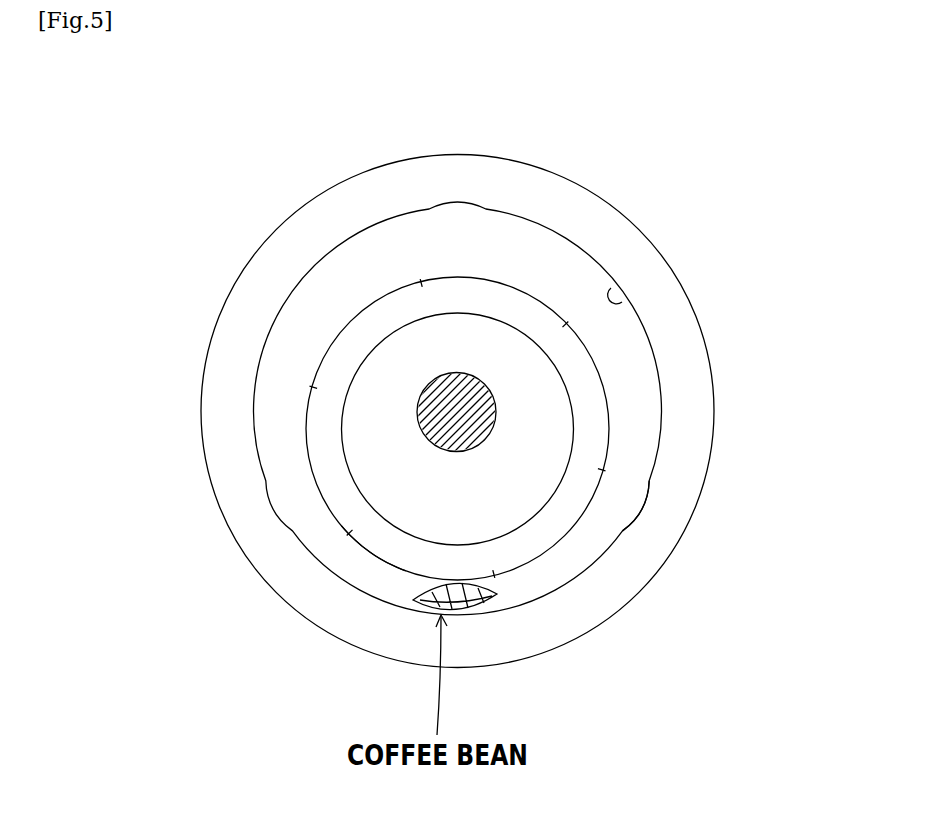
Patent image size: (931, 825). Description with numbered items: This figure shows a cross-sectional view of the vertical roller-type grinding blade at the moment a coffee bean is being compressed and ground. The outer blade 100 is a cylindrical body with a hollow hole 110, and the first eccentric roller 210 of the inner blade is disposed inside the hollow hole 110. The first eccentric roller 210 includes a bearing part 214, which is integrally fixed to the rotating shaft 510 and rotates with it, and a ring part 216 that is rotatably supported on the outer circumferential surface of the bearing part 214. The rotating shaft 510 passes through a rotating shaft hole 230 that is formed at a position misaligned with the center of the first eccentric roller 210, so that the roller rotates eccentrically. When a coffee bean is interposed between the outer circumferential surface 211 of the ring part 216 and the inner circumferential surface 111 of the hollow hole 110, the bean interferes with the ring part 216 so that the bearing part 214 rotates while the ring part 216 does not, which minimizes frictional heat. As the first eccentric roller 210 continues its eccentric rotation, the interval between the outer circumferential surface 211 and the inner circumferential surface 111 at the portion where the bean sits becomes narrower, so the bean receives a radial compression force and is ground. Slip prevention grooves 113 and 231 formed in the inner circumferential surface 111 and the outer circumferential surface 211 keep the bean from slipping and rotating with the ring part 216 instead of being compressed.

The outer blade 100 is at (342, 212).
The hollow hole 110 is at (528, 258).
The inner circumferential surface 111 is at (625, 292).
The slip prevention groove 113 is at (648, 514).
The first eccentric roller 210 is at (100, 430).
The outer circumferential surface 211 is at (363, 557).
The bearing part 214 is at (330, 483).
The ring part 216 is at (363, 423).
The rotating shaft hole 230 is at (422, 386).
The slip prevention groove 231 is at (605, 470).
The rotating shaft 510 is at (490, 384).